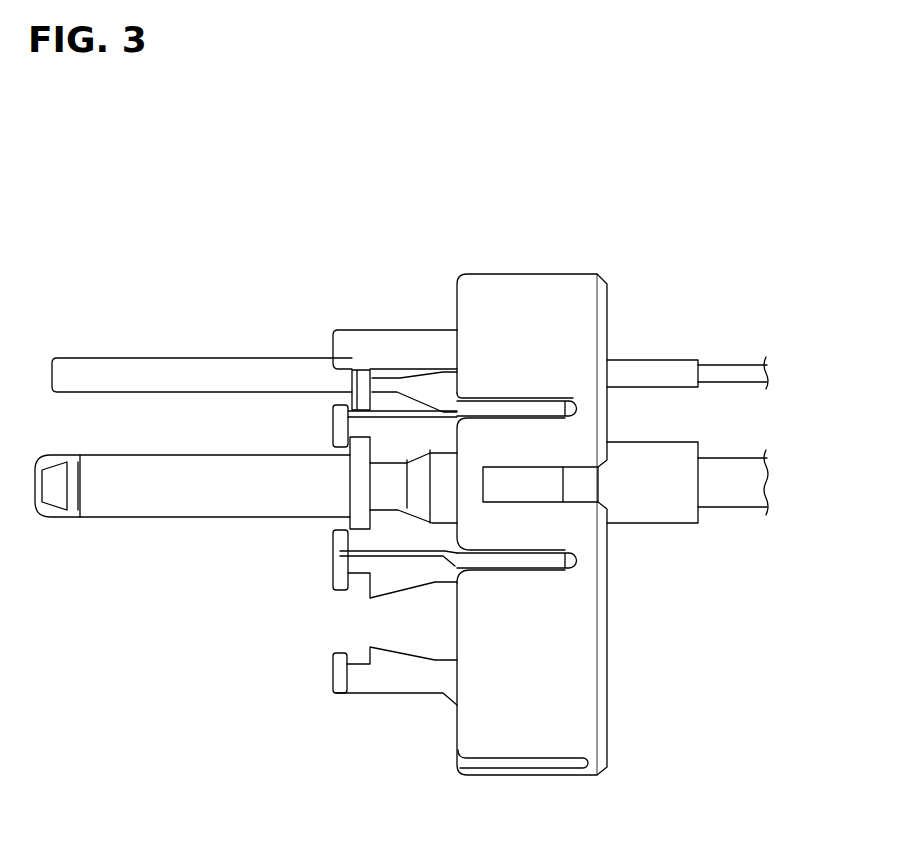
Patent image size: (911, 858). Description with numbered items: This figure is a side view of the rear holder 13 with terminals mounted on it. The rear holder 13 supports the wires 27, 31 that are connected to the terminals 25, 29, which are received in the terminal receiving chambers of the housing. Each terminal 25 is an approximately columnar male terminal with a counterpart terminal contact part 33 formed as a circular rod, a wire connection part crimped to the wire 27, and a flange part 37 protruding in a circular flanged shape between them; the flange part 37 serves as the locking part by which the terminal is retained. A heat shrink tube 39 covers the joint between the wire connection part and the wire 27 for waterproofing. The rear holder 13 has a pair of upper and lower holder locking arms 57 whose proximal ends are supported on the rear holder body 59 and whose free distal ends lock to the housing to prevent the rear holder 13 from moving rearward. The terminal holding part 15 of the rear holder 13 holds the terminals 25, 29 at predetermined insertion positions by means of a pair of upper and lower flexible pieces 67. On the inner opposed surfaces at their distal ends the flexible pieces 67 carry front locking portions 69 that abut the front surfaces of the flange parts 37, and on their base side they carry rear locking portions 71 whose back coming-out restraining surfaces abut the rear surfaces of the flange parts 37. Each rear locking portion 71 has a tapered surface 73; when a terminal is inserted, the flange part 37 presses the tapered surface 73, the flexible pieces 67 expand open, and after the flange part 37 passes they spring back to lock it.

The rear holder 13 is at (578, 265).
The terminal holding part 15 is at (360, 586).
The terminal 25 is at (57, 532).
The wire 27 is at (731, 520).
The terminal 29 is at (95, 348).
The wire 31 is at (744, 347).
The counterpart terminal contact part 33 is at (195, 370).
The flange part 37 is at (355, 481).
The heat shrink tube 39 is at (677, 360).
The holder locking arm 57 is at (480, 442).
The rear holder body 59 is at (610, 678).
The flexible piece 67 is at (386, 555).
The front locking portion 69 is at (335, 525).
The rear locking portion 71 is at (383, 517).
The tapered surface 73 is at (409, 510).